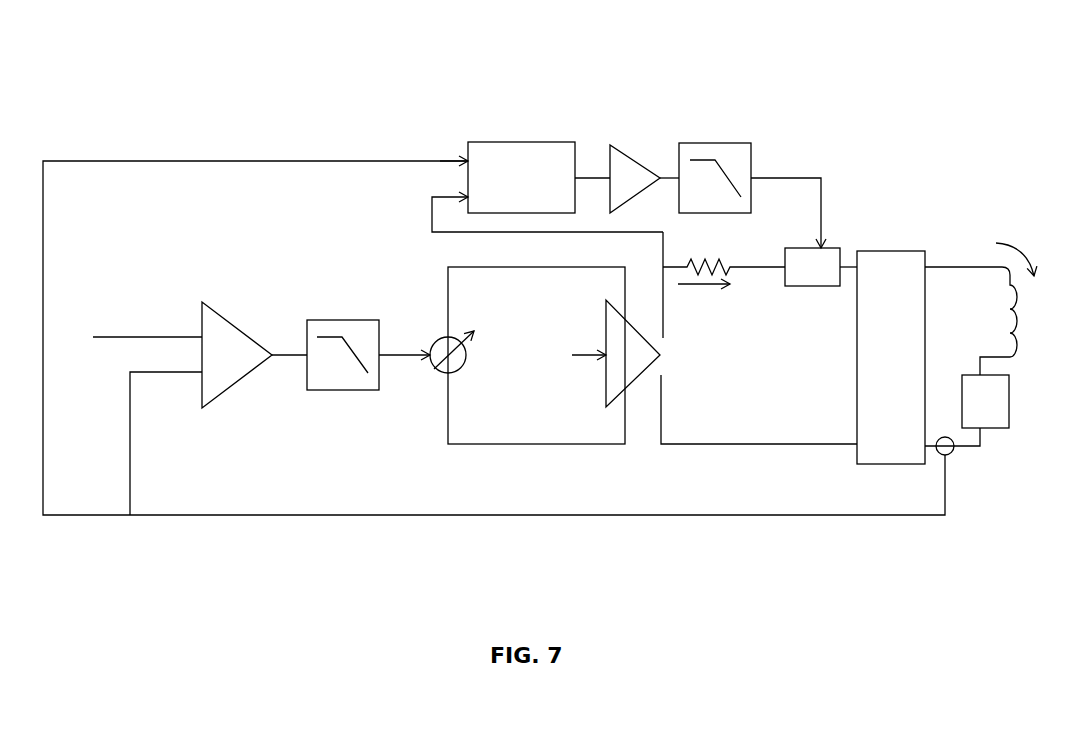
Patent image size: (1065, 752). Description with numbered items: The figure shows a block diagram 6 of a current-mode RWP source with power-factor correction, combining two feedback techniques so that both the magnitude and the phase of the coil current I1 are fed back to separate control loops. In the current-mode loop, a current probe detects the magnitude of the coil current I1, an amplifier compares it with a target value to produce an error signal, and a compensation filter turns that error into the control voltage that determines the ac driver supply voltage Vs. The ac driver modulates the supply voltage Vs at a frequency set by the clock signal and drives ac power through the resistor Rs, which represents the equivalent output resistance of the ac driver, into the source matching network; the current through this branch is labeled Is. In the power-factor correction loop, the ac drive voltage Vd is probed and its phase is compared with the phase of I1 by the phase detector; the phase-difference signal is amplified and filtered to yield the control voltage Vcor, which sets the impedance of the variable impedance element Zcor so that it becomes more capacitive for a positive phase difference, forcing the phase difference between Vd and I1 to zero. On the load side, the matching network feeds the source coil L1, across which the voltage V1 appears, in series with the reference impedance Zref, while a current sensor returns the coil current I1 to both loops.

The block diagram 6 is at (105, 88).
The ac driver supply voltage Vs is at (527, 355).
The ac drive voltage Vd is at (623, 359).
The control voltage Vcor is at (786, 201).
The resistor Rs is at (724, 256).
The source current Is is at (704, 296).
The variable impedance element Zcor is at (812, 267).
The transmit coil inductor L1 is at (971, 321).
The coil voltage V1 is at (953, 353).
The reference impedance Zref is at (985, 401).
The coil current I1 is at (1023, 255).